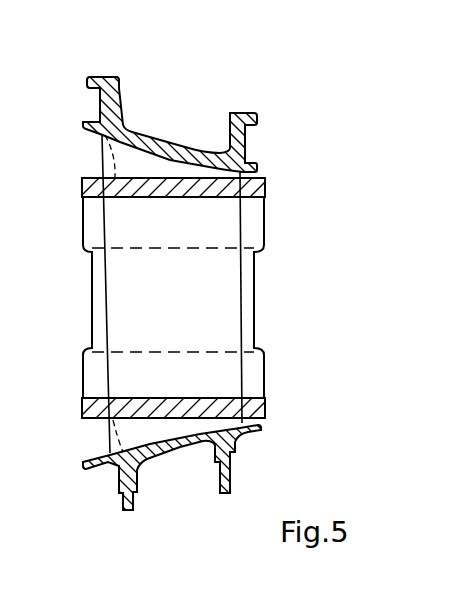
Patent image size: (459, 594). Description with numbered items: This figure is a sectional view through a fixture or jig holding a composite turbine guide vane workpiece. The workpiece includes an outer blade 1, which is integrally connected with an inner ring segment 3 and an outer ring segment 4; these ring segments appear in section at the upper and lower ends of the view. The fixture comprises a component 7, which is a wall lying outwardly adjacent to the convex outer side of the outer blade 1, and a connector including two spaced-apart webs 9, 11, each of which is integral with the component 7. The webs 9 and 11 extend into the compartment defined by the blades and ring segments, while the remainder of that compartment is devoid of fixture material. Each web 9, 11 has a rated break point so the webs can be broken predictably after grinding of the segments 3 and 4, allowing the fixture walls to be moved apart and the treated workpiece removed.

The outer blade 1 is at (222, 328).
The inner ring segment 3 is at (230, 465).
The outer ring segment 4 is at (246, 144).
The component 7 is at (252, 235).
The web 9 is at (262, 188).
The web 11 is at (262, 407).